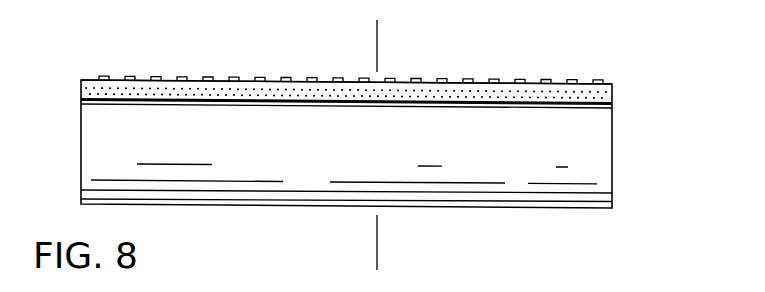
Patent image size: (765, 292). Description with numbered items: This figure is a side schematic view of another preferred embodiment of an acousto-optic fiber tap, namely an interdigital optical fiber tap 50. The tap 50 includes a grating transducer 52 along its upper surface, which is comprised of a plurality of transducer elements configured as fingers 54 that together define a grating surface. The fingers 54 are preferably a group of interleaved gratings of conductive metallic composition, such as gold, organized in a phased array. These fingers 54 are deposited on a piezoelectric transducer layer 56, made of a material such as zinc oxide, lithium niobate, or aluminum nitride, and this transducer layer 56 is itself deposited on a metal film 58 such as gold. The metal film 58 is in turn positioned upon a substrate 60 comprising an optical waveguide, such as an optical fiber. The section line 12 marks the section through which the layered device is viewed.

The composite sheet assembly 50 is at (624, 99).
The top surface layer 52 is at (92, 77).
The raised projections 54 is at (204, 76).
The dotted adhesive layer 56 is at (138, 97).
The dark carrier layer 58 is at (145, 103).
The base substrate layer 60 is at (282, 178).
The section line 12 is at (378, 30).